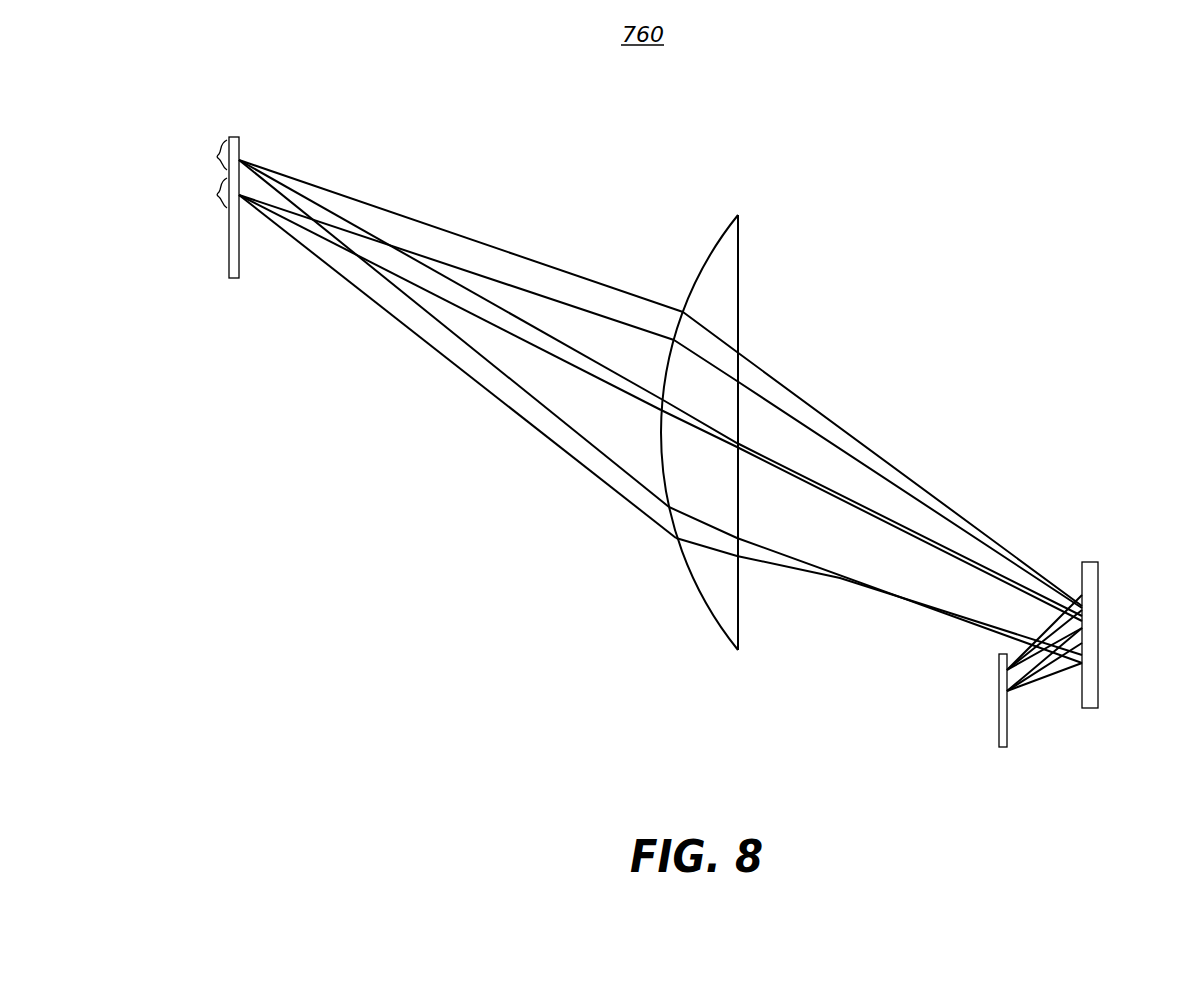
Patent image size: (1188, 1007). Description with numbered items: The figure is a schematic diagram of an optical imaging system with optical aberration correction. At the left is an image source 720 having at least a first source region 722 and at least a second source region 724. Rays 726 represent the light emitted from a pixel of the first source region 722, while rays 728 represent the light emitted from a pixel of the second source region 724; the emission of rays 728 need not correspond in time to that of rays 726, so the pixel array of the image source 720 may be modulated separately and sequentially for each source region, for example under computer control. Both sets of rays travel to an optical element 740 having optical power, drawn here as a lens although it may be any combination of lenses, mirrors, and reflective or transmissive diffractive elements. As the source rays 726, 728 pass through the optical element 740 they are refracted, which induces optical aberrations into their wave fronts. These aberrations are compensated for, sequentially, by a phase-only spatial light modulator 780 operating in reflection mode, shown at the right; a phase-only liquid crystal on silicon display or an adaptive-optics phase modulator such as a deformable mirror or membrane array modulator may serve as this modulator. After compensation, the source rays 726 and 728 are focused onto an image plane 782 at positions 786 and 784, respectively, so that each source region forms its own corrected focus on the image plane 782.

The image source 720 is at (240, 140).
The first source region 722 is at (212, 157).
The second source region 724 is at (210, 198).
The rays 726 is at (300, 176).
The rays 728 is at (287, 218).
The optical element 740 is at (740, 221).
The phase-only spatial light modulator 780 is at (1100, 573).
The image plane 782 is at (1010, 746).
The image plane position 784 is at (998, 668).
The image plane position 786 is at (1010, 698).